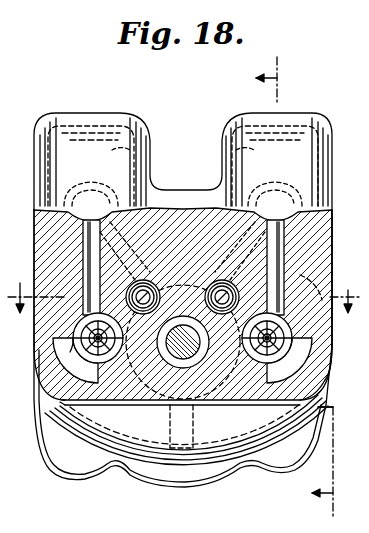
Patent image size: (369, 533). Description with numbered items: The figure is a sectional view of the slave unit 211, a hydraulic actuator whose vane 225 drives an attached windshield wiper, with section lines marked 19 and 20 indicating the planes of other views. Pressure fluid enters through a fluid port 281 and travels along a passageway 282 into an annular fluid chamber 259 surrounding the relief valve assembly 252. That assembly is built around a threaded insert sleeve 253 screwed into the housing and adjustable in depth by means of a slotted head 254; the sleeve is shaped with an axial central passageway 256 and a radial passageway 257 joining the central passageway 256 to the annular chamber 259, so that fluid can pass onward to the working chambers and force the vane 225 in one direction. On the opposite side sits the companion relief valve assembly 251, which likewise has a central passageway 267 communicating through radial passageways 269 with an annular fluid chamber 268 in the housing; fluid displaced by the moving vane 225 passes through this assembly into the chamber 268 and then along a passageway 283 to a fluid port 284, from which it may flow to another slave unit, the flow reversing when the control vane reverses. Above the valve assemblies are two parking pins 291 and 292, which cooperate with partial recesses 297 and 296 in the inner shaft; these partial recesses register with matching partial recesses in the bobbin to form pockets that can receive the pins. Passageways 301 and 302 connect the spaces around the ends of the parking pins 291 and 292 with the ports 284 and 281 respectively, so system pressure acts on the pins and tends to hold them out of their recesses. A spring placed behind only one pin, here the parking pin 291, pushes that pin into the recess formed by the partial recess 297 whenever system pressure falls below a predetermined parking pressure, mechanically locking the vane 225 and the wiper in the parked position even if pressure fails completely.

The slave unit 211 is at (67, 111).
The fluid port 284 is at (118, 136).
The fluid port 281 is at (246, 138).
The parking pin 291 is at (148, 284).
The parking pin 292 is at (218, 282).
The passageway 301 is at (108, 212).
The passageway 302 is at (245, 212).
The passageway 283 is at (85, 240).
The passageway 282 is at (292, 232).
The slotted head 254 is at (334, 266).
The central passageway 267 is at (73, 338).
The annular fluid chamber 268 is at (70, 352).
The radial passageways 269 is at (67, 398).
The relief valve assembly 251 is at (60, 402).
The partial recess 297 is at (144, 404).
The partial recess 296 is at (200, 404).
The vane 225 is at (182, 442).
The axial central passageway 256 is at (296, 326).
The radial passageway 257 is at (300, 340).
The annular fluid chamber 259 is at (322, 364).
The relief valve assembly 252 is at (316, 384).
The threaded insert sleeve 253 is at (343, 414).
The section line 19- 19 is at (308, 287).
The section line 20- 20 is at (185, 289).